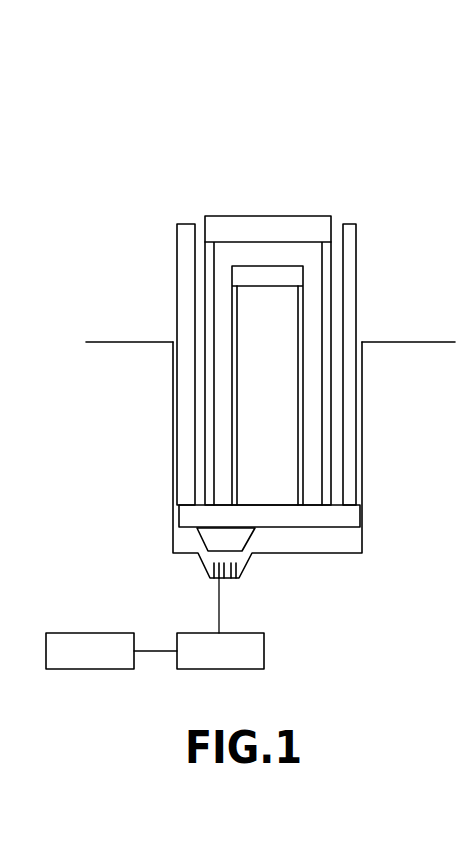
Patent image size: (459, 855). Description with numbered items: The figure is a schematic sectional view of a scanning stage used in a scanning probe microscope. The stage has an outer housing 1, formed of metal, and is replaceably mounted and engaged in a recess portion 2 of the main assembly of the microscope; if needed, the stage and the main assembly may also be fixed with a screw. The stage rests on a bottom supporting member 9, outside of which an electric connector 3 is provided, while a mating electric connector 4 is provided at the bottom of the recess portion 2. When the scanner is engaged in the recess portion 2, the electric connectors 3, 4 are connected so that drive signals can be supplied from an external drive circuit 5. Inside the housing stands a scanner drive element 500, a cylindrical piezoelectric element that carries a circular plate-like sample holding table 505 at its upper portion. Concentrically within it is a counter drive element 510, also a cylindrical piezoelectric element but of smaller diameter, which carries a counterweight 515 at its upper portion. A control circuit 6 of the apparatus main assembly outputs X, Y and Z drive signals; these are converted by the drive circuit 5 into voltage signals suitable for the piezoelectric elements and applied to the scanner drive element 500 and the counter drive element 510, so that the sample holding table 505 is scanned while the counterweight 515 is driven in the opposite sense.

The outer housing 1 is at (185, 275).
The recess portion 2 is at (130, 352).
The electric connector 3 is at (233, 539).
The electric connector 4 is at (230, 579).
The drive circuit 5 is at (253, 633).
The control circuit 6 is at (115, 633).
The bottom supporting member 9 is at (317, 517).
The scanner drive element 500 is at (316, 334).
The sample holding table 505 is at (282, 223).
The counter drive element 510 is at (238, 370).
The counterweight 515 is at (329, 334).